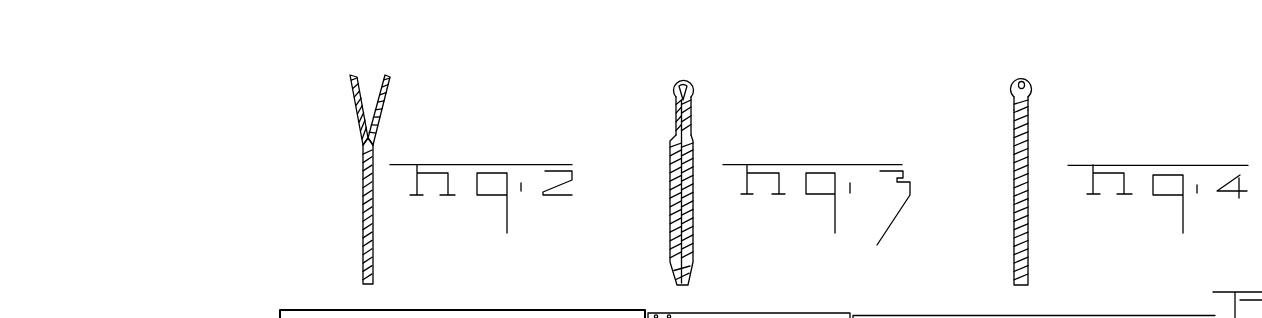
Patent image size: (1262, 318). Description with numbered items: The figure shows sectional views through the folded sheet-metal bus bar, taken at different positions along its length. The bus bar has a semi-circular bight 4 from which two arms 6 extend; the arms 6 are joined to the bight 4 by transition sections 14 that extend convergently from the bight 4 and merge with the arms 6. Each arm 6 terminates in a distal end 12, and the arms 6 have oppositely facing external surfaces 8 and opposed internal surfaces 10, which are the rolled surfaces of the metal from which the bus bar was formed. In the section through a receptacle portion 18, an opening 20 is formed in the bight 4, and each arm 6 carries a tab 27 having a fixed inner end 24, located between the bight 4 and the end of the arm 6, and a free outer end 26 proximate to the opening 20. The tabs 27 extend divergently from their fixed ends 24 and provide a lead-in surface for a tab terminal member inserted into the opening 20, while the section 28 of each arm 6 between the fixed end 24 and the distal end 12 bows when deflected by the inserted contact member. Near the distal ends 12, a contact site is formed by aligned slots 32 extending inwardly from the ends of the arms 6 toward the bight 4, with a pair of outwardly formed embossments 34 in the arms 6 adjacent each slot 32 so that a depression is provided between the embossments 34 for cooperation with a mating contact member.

In FIG. 3, the bight 4 is at (683, 80).
In FIG. 4, the bight 4 is at (1022, 82).
In FIG. 4, the arms 6 is at (1013, 210).
In FIG. 4, the external surfaces 8 is at (1013, 145).
In FIG. 3, the internal surfaces 10 is at (678, 175).
In FIG. 4, the distal ends 12 is at (1037, 182).
In FIG. 3, the transition sections 14 is at (692, 95).
In FIG. 4, the transition sections 14 is at (1032, 98).
In FIG. 2, the receptacle portion 18 is at (378, 160).
In FIG. 2, the opening 20 is at (368, 97).
In FIG. 2, the fixed end 24 is at (358, 137).
In FIG. 2, the free outer end 26 is at (348, 75).
In FIG. 2, the tab 27 is at (383, 110).
In FIG. 2, the section 28 is at (362, 222).
In FIG. 3, the slots 32 is at (883, 315).
In FIG. 3, the embossments 34 is at (672, 212).